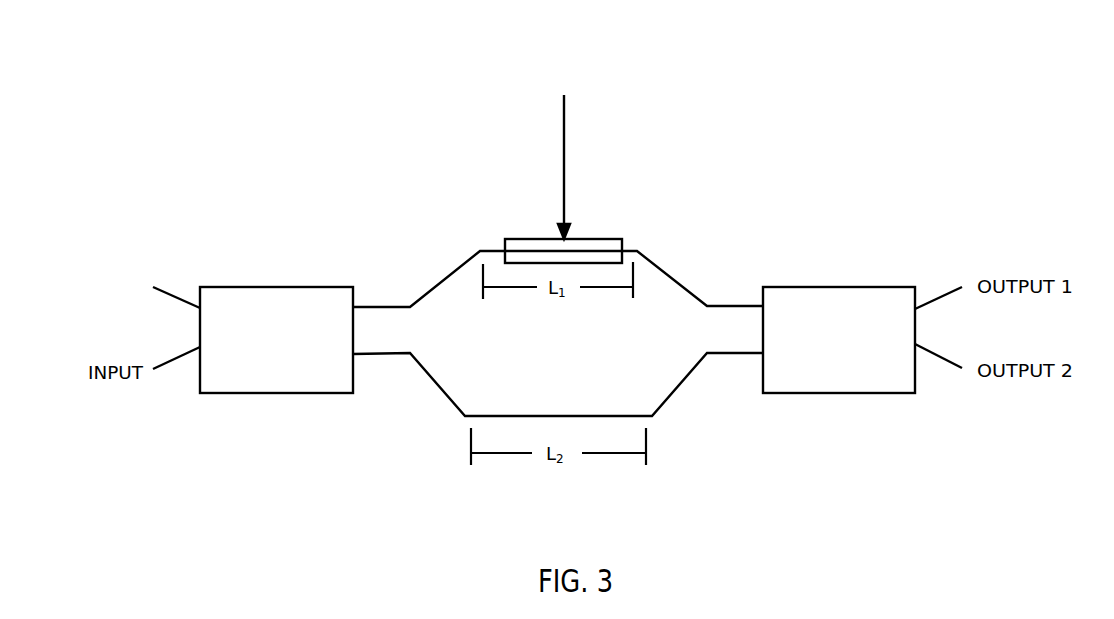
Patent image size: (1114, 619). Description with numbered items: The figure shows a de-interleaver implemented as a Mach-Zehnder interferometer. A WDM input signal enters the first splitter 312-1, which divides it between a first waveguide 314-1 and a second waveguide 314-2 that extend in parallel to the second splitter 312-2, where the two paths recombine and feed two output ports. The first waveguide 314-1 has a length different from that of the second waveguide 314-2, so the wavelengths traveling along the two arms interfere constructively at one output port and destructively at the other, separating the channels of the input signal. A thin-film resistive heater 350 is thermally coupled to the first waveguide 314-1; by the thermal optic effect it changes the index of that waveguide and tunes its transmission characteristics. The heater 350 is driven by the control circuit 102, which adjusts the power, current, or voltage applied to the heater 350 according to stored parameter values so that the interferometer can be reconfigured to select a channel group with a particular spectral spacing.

The first splitter 312-1 is at (277, 287).
The second splitter 312-2 is at (850, 287).
The first waveguide 314-1 is at (668, 276).
The second waveguide 314-2 is at (443, 395).
The thin-film resistive heater 350 is at (523, 239).
The control circuit 102 is at (563, 137).